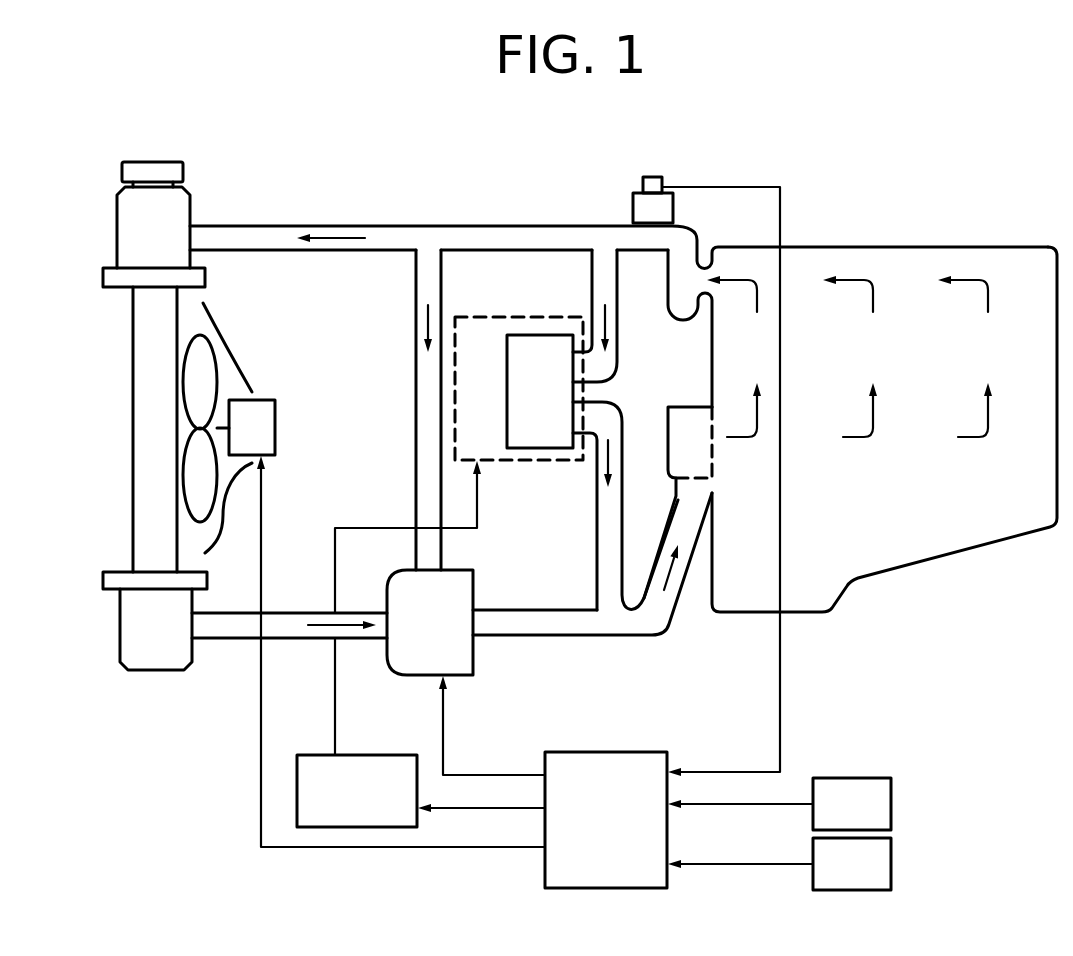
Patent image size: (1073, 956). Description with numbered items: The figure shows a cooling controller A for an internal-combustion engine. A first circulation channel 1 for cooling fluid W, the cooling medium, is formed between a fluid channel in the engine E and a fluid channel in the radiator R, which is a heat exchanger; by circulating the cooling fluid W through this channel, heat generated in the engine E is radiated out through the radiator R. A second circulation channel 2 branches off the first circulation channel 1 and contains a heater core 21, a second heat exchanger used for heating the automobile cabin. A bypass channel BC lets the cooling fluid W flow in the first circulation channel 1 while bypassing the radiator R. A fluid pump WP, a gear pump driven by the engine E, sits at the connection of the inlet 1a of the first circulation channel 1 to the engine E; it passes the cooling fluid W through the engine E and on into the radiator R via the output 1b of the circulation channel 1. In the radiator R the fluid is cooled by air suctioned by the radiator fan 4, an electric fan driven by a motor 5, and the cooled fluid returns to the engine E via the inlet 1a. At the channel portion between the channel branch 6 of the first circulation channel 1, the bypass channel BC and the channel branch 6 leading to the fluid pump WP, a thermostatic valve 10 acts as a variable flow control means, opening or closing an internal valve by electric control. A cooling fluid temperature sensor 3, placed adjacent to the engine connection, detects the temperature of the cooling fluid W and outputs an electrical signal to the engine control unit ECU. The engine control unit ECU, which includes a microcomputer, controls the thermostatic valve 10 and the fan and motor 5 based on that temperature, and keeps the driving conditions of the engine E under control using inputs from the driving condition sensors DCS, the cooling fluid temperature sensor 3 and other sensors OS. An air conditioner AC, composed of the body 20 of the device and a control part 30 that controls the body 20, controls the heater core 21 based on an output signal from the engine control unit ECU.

The first circulation channel 1 is at (619, 203).
The inlet of the first circulation channel 1a is at (242, 623).
The output of the circulation channel 1b is at (388, 232).
The second circulation channel 2 is at (603, 560).
The cooling fluid temperature sensor 3 is at (648, 177).
The radiator fan 4 is at (193, 365).
The motor 5 is at (265, 418).
The channel branch 6 is at (497, 628).
The thermostatic valve 10 is at (420, 653).
The body of the device 20 is at (488, 452).
The heater core 21 is at (530, 342).
The control part 30 is at (365, 827).
The cooling controller A is at (450, 192).
The engine E is at (892, 245).
The radiator R is at (148, 430).
The cooling fluid W is at (320, 241).
The bypass channel BC is at (413, 387).
The fluid pump WP is at (693, 422).
The air conditioner AC is at (561, 474).
The engine control unit ECU is at (606, 820).
The driving condition sensors DCS is at (779, 804).
The other sensors OS is at (779, 864).